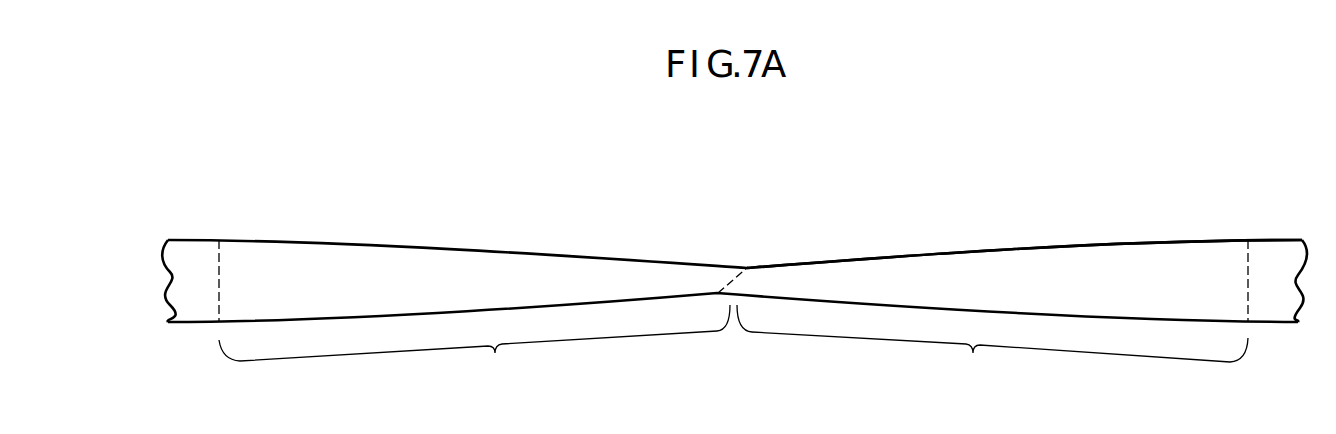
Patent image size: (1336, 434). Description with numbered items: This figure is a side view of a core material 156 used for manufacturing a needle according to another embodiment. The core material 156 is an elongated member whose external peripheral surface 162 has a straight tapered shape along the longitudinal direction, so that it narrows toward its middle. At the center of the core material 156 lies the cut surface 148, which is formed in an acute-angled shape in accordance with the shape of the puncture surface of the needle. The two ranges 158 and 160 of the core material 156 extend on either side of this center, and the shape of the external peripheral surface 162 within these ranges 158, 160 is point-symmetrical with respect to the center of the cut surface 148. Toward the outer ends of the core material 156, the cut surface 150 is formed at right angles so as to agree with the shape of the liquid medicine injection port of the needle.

The cut surface 148 is at (723, 268).
The cut surface 150 is at (220, 266).
The core material 156 is at (1067, 153).
The range 158 is at (474, 346).
The range 160 is at (992, 346).
The external peripheral surface 162 is at (892, 257).